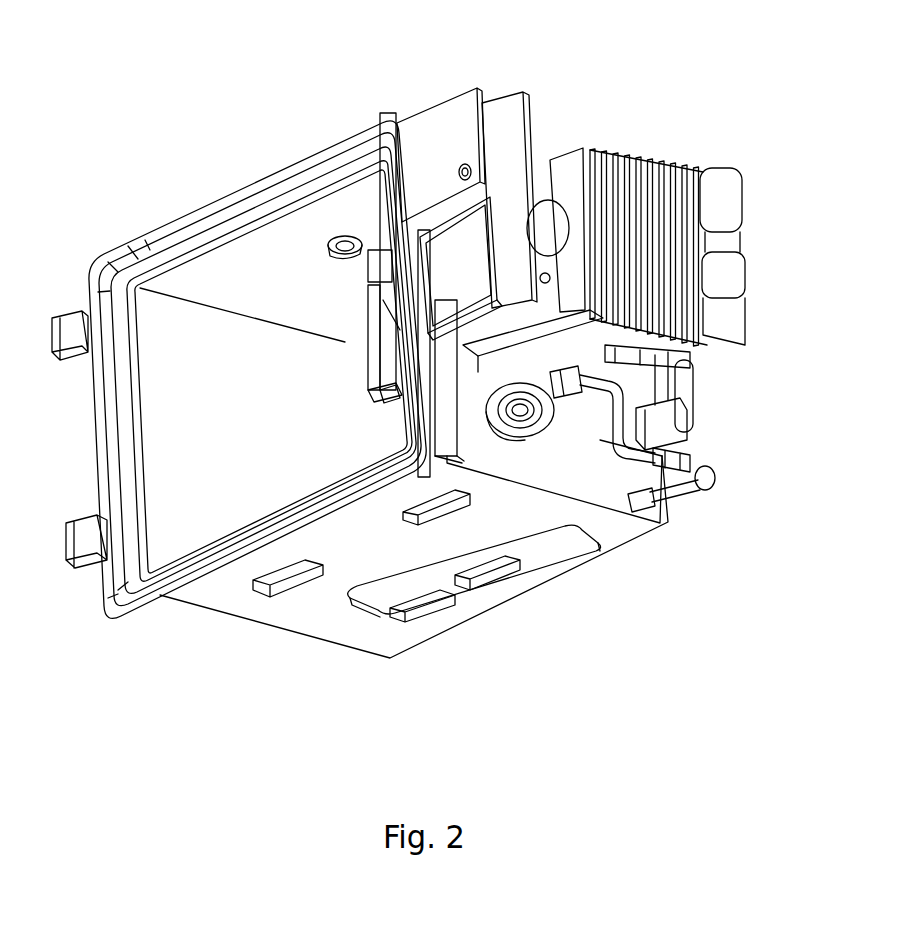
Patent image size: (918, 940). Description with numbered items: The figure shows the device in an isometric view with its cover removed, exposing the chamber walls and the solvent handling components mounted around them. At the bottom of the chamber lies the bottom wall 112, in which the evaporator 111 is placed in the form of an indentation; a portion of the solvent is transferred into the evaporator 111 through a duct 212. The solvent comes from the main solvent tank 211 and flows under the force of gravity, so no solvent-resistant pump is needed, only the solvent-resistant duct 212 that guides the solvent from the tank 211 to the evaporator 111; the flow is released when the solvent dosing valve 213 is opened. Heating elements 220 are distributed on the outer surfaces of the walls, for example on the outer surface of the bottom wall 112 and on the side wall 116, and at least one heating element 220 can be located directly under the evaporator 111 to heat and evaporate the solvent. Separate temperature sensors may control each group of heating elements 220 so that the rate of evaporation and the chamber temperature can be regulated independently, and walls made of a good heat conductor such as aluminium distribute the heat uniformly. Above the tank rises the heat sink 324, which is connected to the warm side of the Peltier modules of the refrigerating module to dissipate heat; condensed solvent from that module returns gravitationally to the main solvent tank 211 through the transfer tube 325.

The side wall 116 is at (237, 382).
The heat sink 324 is at (675, 242).
The main solvent tank 211 is at (540, 330).
The transfer tube 325 is at (690, 349).
The solvent dosing valve 213 is at (663, 415).
The duct 212 is at (710, 475).
The heating elements 220 is at (455, 505).
The evaporator 111 is at (530, 550).
The bottom wall 112 is at (490, 598).